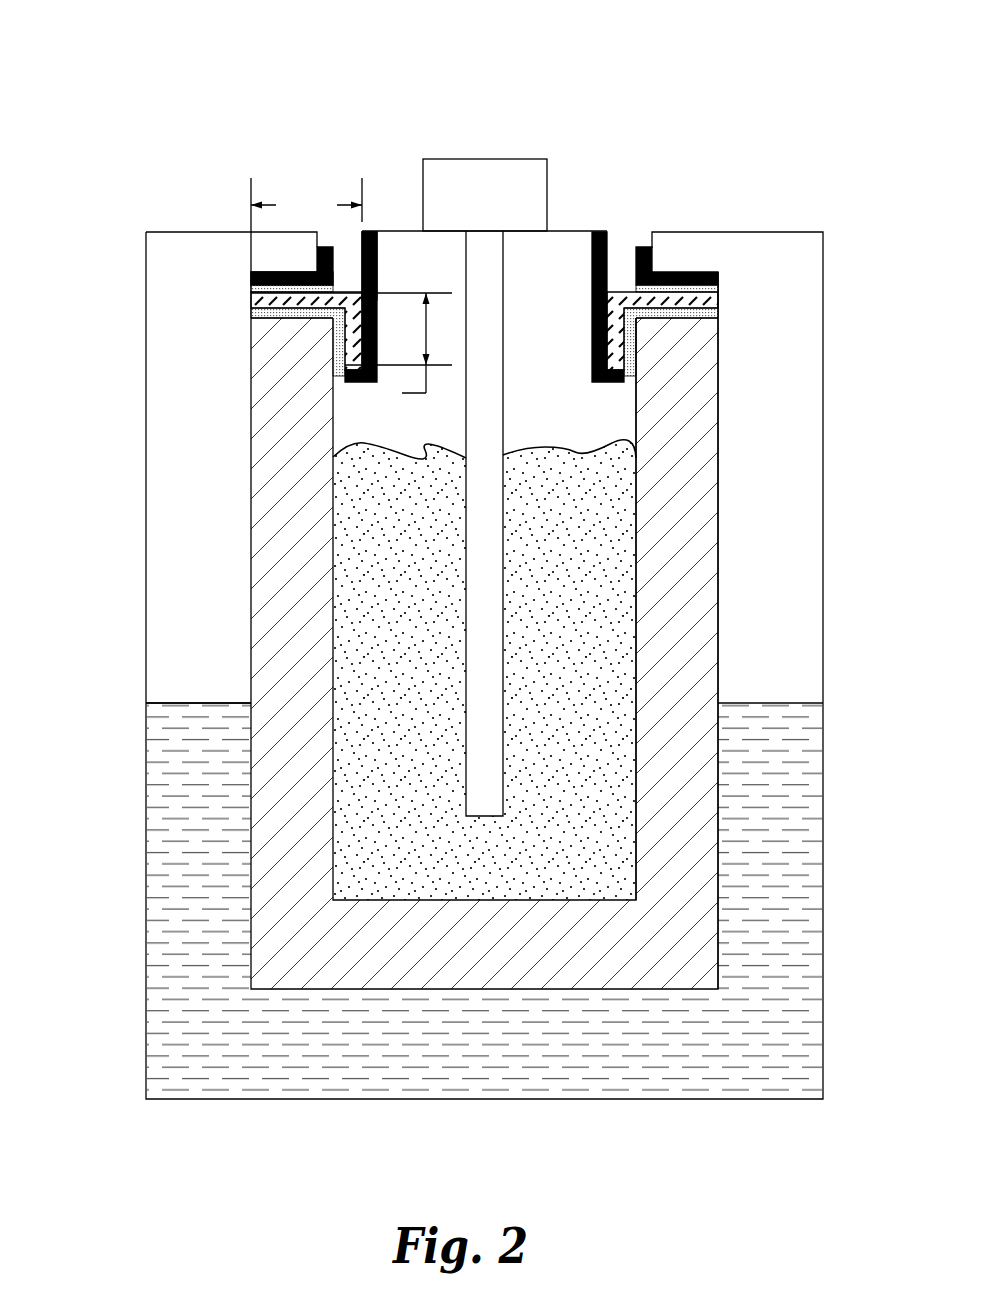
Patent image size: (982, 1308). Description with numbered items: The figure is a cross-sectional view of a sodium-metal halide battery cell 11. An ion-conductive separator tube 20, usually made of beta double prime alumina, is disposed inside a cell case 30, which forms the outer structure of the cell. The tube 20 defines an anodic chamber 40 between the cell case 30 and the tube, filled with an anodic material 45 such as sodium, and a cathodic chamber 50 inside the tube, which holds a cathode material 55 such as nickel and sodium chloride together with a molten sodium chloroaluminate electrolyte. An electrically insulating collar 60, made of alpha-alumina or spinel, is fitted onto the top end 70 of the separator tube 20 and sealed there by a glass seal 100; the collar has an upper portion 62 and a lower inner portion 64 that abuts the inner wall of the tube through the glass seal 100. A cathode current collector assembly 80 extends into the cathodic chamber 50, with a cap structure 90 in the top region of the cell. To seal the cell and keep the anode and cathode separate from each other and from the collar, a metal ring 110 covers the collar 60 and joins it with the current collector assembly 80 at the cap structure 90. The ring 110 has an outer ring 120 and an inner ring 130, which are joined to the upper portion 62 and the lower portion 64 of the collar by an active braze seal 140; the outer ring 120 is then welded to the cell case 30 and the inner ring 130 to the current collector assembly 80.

The sodium-metal halide battery cell 11 is at (340, 44).
The ion-conductive separator tube 20 is at (265, 465).
The cell case 30 is at (146, 612).
The anodic chamber 40 is at (202, 665).
The anodic material 45 is at (172, 958).
The cathodic chamber 50 is at (445, 437).
The cathode material 55 is at (548, 470).
The electrically insulating collar 60 is at (243, 300).
The upper portion 62 is at (306, 200).
The lower inner portion 64 is at (351, 350).
The top end 70 is at (683, 362).
The cathode current collector assembly 80 is at (493, 335).
The cap structure 90 is at (497, 170).
The glass seal 100 is at (251, 312).
The ring 110 is at (251, 278).
The outer ring 120 is at (317, 257).
The inner ring 130 is at (379, 262).
The active braze seal 140 is at (251, 284).